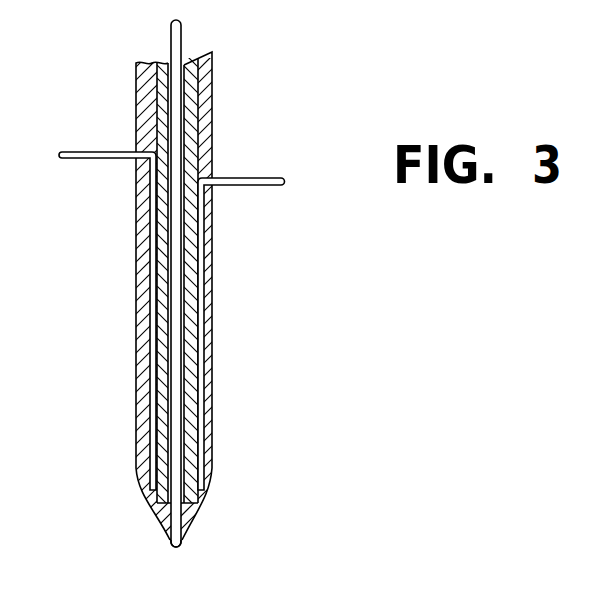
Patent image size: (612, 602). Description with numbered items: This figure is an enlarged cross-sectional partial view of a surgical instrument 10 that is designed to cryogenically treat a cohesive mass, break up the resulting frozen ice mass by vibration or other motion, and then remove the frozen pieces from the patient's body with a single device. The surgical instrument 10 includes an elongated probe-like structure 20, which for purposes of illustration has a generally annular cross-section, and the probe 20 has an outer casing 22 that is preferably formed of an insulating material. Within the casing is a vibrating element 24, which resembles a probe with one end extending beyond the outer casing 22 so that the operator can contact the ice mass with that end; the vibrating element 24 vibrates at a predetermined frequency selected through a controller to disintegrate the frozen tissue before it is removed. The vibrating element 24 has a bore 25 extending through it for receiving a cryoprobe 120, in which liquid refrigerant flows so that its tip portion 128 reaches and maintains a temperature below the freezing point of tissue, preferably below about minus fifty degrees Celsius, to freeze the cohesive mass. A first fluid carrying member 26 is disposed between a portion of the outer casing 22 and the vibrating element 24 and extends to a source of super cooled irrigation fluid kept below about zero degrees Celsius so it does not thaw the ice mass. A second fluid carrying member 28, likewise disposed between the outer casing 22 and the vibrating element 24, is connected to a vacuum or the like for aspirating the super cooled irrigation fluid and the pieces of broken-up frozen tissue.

The surgical instrument 10 is at (242, 105).
The elongated probe-like structure 20 is at (137, 258).
The outer casing 22 is at (197, 300).
The vibrating element 24 is at (160, 512).
The bore 25 is at (176, 502).
The first fluid carrying member 26 is at (198, 445).
The second fluid carrying member 28 is at (152, 438).
The cryoprobe 120 is at (170, 32).
The tip portion 128 is at (178, 546).